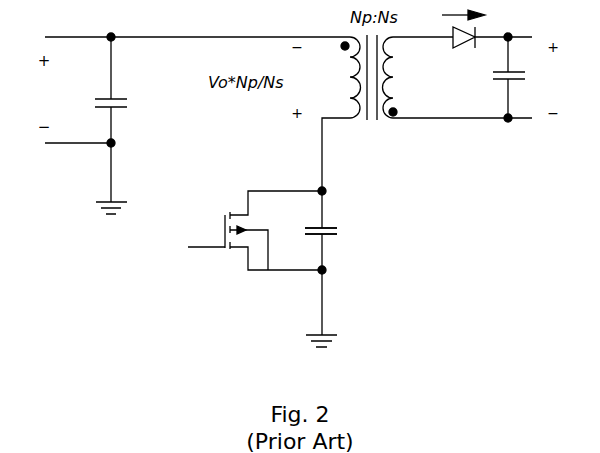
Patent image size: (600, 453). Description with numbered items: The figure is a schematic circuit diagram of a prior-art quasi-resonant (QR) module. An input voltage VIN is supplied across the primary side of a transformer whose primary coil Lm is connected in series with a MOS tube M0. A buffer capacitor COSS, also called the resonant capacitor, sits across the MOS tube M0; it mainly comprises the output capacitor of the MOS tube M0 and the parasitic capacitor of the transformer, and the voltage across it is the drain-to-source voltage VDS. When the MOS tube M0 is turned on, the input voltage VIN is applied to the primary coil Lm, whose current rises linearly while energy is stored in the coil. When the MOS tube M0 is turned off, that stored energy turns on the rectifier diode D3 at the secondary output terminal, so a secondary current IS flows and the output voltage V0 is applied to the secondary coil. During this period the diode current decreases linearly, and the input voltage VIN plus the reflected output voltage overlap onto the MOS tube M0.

The input voltage VIN is at (94, 90).
The primary coil Lm is at (356, 77).
The rectifier diode D3 is at (479, 49).
The secondary current IS is at (478, 18).
The output voltage V0 is at (519, 77).
The buffer capacitor COSS is at (308, 230).
The drain-source voltage VDS is at (337, 231).
The MOS tube M0 is at (253, 230).